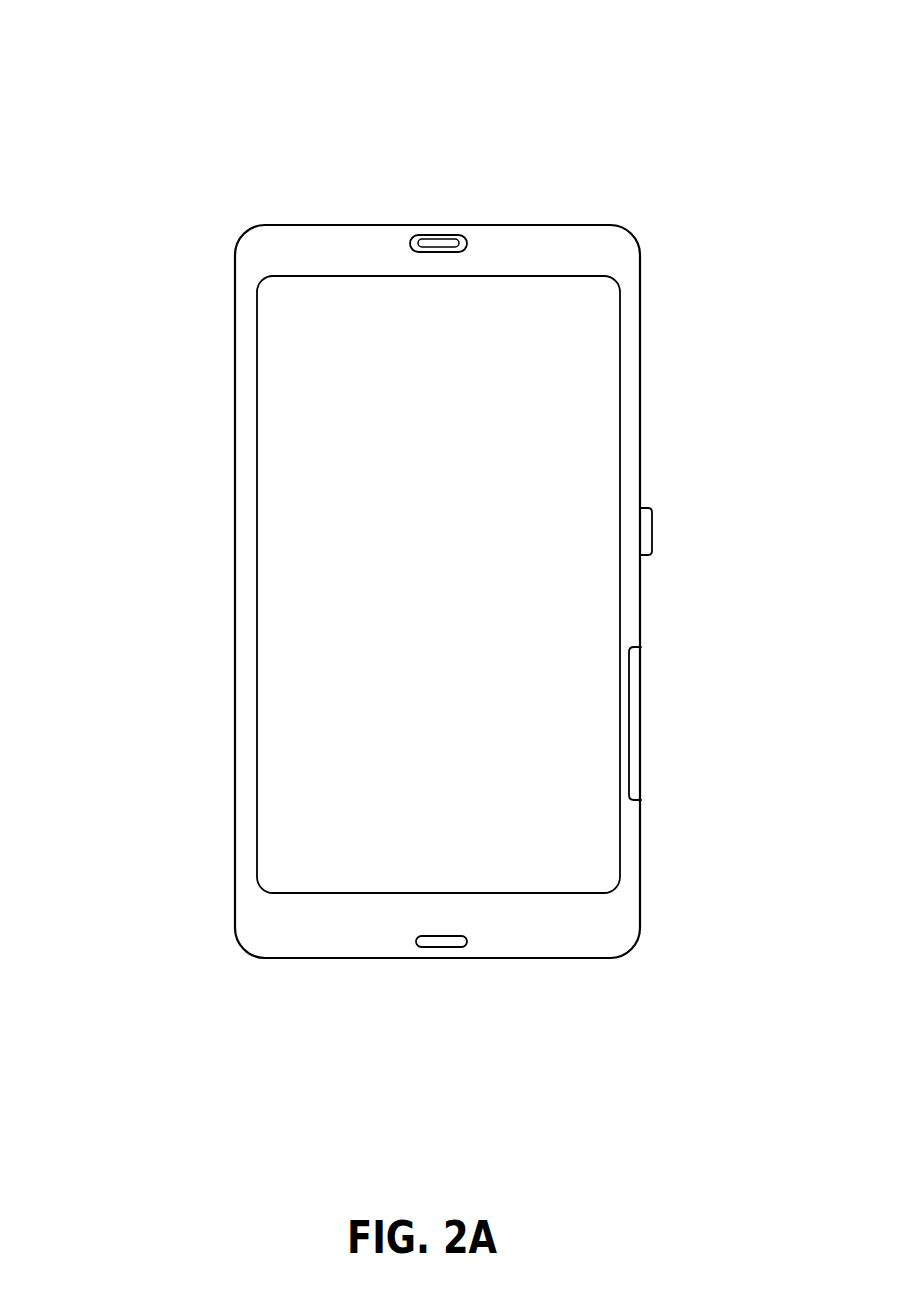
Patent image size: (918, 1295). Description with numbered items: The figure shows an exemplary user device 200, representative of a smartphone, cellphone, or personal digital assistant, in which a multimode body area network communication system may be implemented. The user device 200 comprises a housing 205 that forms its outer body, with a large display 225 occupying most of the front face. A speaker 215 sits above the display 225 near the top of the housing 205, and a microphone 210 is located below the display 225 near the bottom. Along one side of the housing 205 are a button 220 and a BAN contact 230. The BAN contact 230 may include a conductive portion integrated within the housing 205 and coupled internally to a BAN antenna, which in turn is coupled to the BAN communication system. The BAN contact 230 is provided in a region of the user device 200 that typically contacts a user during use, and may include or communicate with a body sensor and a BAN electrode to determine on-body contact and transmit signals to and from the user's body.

The user device 200 is at (152, 38).
The housing 205 is at (236, 533).
The microphone 210 is at (442, 948).
The speaker 215 is at (448, 233).
The button 220 is at (650, 529).
The display 225 is at (605, 384).
The BAN contact 230 is at (642, 725).